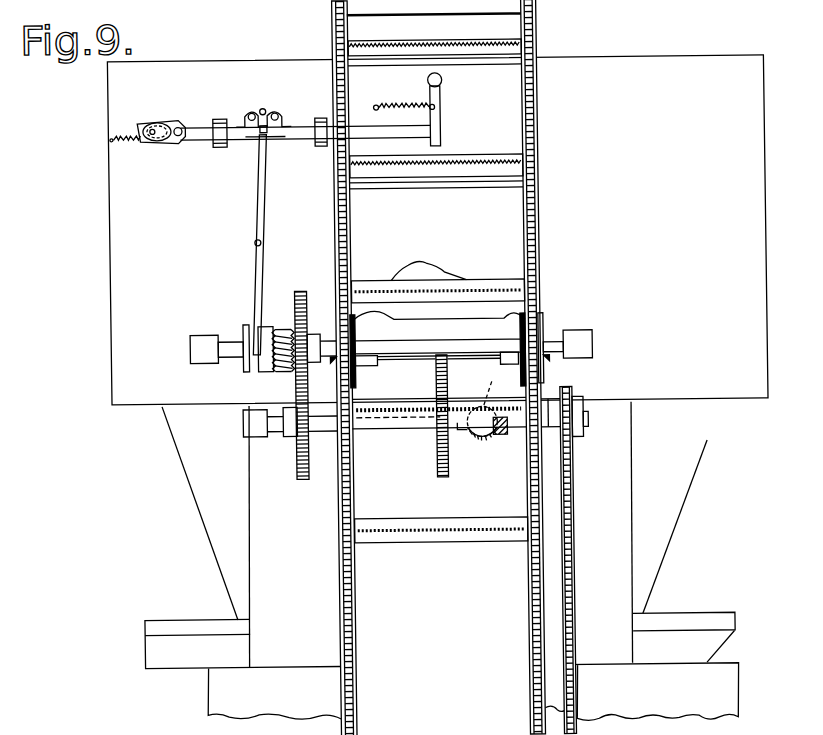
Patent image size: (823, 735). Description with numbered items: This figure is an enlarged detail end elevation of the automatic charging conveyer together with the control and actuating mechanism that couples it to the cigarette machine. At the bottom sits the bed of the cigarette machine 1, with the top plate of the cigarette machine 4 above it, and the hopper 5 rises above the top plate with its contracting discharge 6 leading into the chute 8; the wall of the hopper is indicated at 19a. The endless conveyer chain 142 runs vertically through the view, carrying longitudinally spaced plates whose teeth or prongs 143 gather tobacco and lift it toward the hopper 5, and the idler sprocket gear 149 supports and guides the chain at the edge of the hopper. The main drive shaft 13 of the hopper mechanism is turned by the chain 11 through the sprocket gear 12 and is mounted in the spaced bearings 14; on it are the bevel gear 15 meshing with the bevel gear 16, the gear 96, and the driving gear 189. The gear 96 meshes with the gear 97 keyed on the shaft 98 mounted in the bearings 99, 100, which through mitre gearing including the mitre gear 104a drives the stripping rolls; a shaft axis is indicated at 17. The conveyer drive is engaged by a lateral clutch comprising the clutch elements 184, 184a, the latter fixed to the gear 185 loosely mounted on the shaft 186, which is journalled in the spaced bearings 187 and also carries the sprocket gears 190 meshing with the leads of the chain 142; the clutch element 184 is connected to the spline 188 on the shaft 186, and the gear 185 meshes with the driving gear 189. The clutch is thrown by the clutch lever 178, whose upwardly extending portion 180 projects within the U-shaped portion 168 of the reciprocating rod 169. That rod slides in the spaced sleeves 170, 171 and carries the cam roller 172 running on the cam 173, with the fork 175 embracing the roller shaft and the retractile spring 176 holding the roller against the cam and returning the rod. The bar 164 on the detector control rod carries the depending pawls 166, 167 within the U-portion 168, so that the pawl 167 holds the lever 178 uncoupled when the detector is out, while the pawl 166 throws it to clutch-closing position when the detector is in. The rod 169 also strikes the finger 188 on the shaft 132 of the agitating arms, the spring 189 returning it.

The bed of the cigarette machine 1 is at (722, 695).
The top plate of the cigarette machine 4 is at (725, 665).
The hopper 5 is at (766, 276).
The contracting discharge 6 is at (664, 527).
The chute 8 is at (141, 642).
The chain 11 is at (570, 562).
The sprocket gear 12 is at (585, 410).
The shaft 13 is at (324, 430).
The spaced bearings 14 is at (249, 431).
The bevel gear 15 is at (502, 439).
The bevel gear 16 is at (477, 440).
The shaft axis 17 is at (496, 386).
The housing wall 19a is at (690, 326).
The gear 96 is at (437, 452).
The gear 97 is at (444, 357).
The shaft 98 is at (410, 360).
The bearing 99 is at (362, 366).
The bearing 100 is at (511, 354).
The mitre gear 104a is at (549, 360).
The shaft 132 is at (451, 80).
The conveyer chain 142 is at (338, 249).
The teeth or prongs 143 is at (357, 49).
The sprocket gear or idler 149 is at (484, 290).
The bar 164 is at (269, 107).
The pawl 166 is at (288, 119).
The pawl 167 is at (251, 119).
The U-shaped portion 168 is at (270, 132).
The reciprocating rod 169 is at (201, 125).
The sleeve 170 is at (323, 145).
The sleeve 171 is at (219, 145).
The cam roller 172 is at (181, 134).
The cam 173 is at (161, 123).
The fork 175 is at (147, 120).
The retractile spring 176 is at (128, 142).
The clutch lever 178 is at (262, 202).
The upwardly extending portion 180 is at (260, 137).
The clutch element 184 is at (263, 335).
The clutch element 184a is at (294, 323).
The gear 185 is at (342, 277).
The shaft 186 is at (424, 340).
The bearing 187 is at (205, 343).
The spline 188 is at (449, 127).
The driving gear 189 is at (406, 103).
The sprocket gears 190 is at (361, 338).